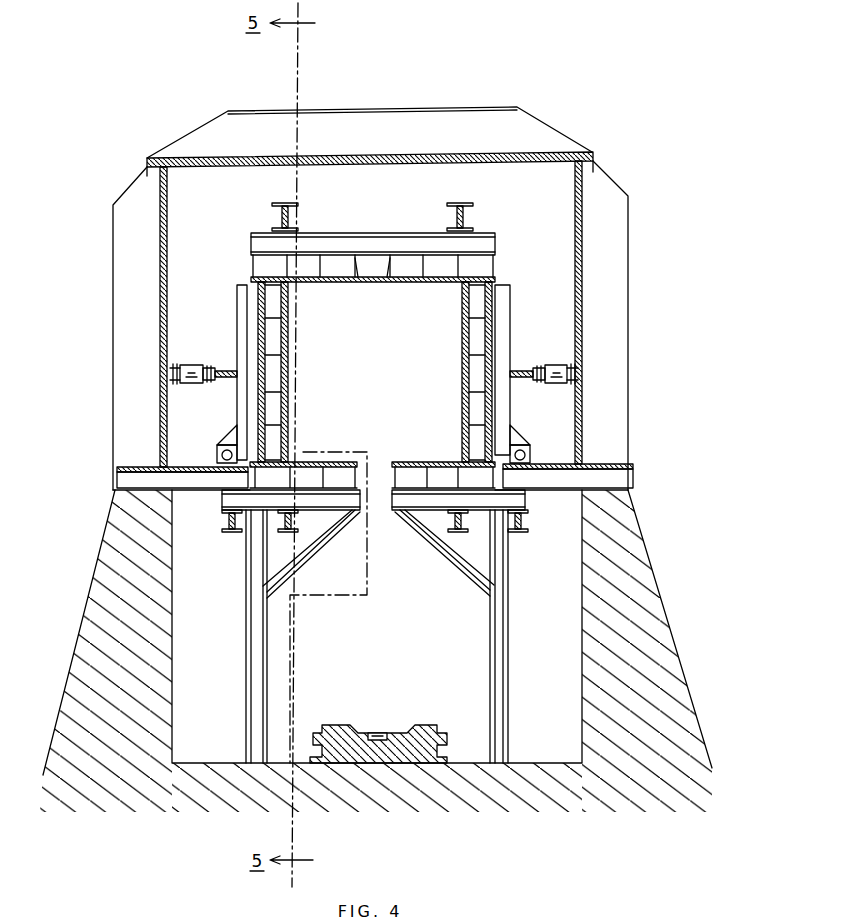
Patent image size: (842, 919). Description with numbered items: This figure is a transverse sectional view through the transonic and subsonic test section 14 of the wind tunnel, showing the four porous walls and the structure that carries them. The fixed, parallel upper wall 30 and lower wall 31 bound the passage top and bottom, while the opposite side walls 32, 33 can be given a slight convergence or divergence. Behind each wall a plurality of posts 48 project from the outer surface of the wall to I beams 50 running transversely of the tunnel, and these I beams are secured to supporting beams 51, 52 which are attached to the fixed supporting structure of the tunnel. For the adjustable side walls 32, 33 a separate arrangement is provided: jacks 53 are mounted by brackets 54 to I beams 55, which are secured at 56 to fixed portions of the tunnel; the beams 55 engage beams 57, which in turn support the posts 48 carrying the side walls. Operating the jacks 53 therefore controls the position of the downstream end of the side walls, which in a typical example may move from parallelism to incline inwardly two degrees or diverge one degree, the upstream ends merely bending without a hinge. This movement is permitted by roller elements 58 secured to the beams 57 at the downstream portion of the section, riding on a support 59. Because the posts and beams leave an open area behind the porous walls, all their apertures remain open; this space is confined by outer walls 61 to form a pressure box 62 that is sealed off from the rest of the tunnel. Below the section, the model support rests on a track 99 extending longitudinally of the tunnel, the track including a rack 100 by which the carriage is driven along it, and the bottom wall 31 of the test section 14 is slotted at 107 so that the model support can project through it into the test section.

The transonic and subsonic test section 14 is at (572, 116).
The upper wall 30 is at (309, 292).
The lower wall 31 is at (303, 460).
The side wall 32 is at (288, 356).
The side wall 33 is at (462, 333).
The posts 48 is at (495, 263).
The I beams 50 is at (493, 238).
The supporting beam 51 is at (291, 218).
The supporting beam 52 is at (301, 522).
The jacks 53 is at (191, 365).
The brackets 54 is at (211, 383).
The I beams 55 is at (233, 370).
The securing point 56 is at (175, 386).
The beams 57 is at (246, 300).
The roller elements 58 is at (222, 461).
The support 59 is at (188, 466).
The outer walls 61 is at (170, 272).
The pressure box 62 is at (199, 202).
The track 99 is at (420, 726).
The rack 100 is at (372, 734).
The slot 107 is at (380, 456).